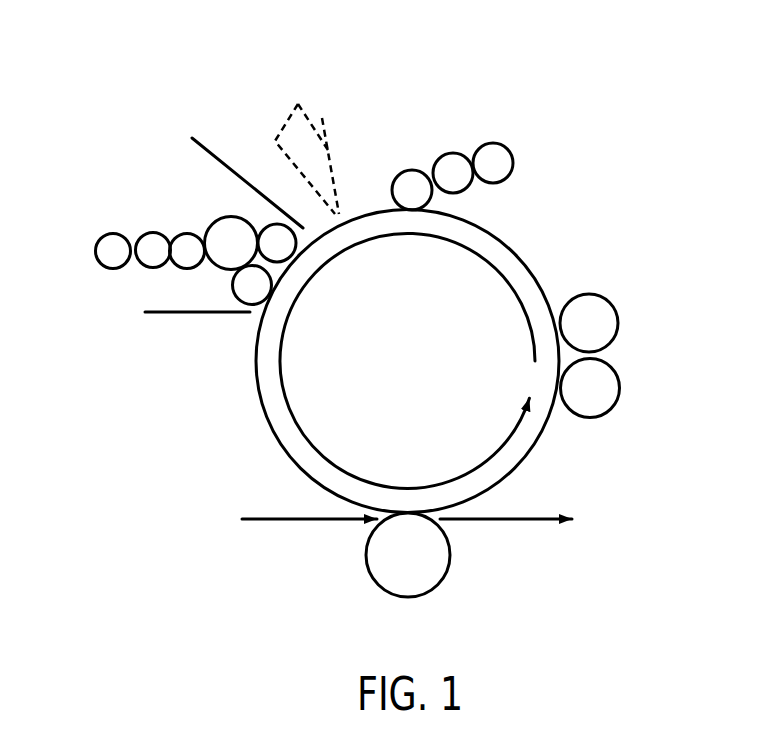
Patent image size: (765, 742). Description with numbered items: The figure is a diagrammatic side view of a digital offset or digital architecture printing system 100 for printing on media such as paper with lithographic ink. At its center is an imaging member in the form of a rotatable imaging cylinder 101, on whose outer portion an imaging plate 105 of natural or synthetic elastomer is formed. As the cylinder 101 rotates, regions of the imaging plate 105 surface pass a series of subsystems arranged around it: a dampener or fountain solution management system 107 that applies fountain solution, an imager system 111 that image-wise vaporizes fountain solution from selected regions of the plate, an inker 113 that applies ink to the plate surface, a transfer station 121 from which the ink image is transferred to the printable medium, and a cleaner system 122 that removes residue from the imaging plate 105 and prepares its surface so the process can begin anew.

The digital architecture printing system 100 is at (422, 85).
The imaging cylinder 101 is at (453, 420).
The imaging plate 105 is at (513, 248).
The fountain solution management system 107 is at (513, 157).
The imager system 111 is at (298, 104).
The inker 113 is at (98, 243).
The transfer station 121 is at (425, 565).
The cleaner system 122 is at (617, 356).